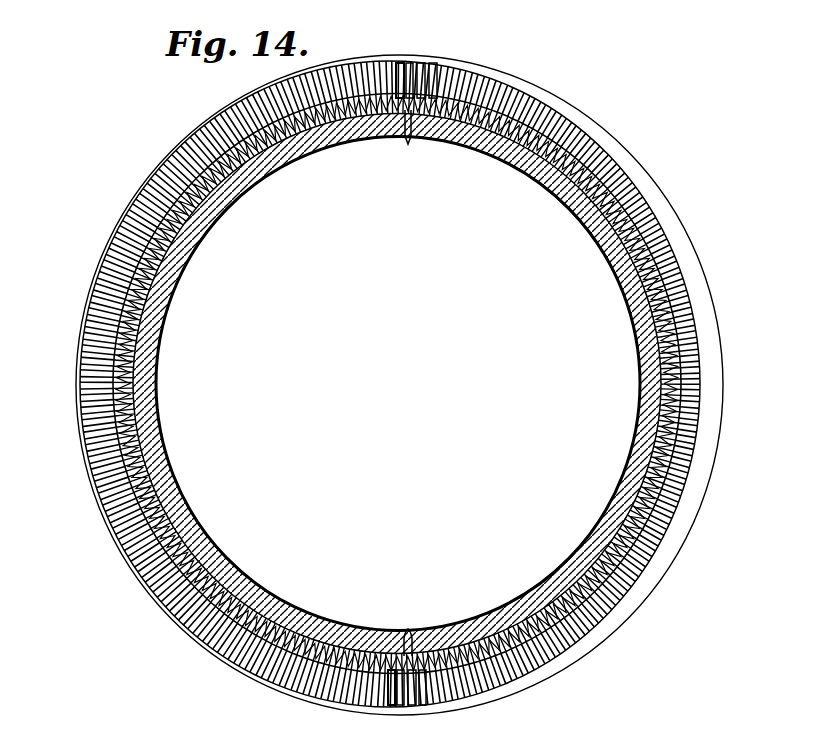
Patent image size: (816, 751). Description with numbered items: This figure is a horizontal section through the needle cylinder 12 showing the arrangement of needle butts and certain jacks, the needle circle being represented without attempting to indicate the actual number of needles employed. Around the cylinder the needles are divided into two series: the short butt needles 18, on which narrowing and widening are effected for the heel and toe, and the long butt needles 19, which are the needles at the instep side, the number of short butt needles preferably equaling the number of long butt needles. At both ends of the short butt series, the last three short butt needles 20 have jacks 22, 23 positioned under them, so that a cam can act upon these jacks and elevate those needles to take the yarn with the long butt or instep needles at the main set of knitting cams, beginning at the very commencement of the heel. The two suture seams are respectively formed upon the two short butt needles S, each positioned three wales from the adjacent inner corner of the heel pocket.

The needle cylinder 12 is at (631, 373).
The short butt needles 18 is at (711, 337).
The long butt needles 19 is at (68, 330).
The last three short butt needles 20 is at (400, 138).
The jacks 22 is at (431, 44).
The jacks 23 is at (418, 708).
The short butt needles S is at (396, 51).